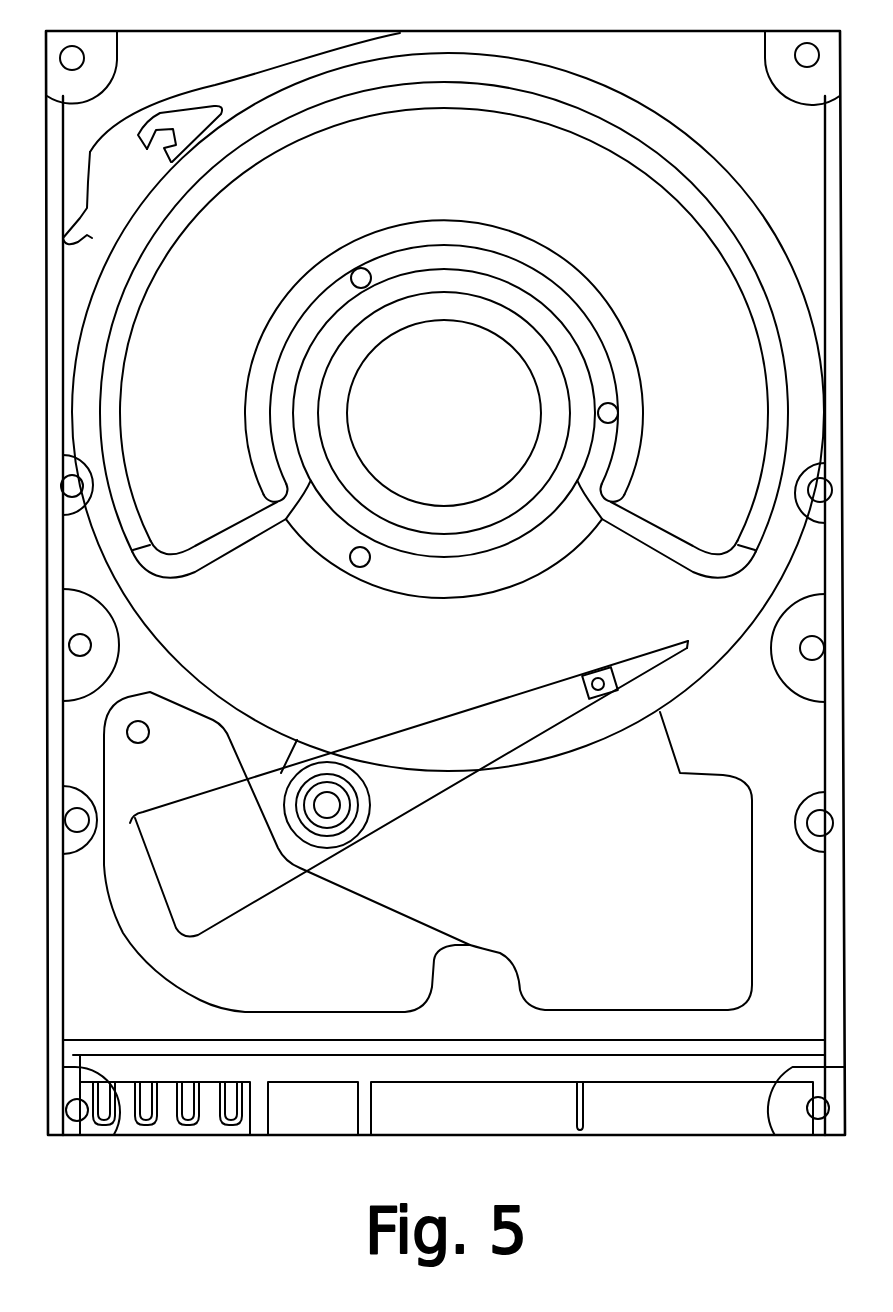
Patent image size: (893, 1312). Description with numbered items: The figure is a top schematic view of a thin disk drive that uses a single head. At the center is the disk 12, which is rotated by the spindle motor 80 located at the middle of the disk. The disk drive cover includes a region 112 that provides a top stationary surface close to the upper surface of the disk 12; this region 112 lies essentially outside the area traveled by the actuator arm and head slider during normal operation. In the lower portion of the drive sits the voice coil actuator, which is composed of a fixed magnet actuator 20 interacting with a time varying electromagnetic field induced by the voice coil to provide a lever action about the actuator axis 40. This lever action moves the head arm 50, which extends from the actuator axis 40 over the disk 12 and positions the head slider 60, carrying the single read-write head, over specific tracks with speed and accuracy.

The disk 12 is at (327, 688).
The region 112 is at (744, 442).
The spindle motor 80 is at (462, 380).
The fixed magnet actuator 20 is at (327, 972).
The head arm 50 is at (455, 778).
The actuator axis 40 is at (357, 833).
The head slider 60 is at (662, 655).